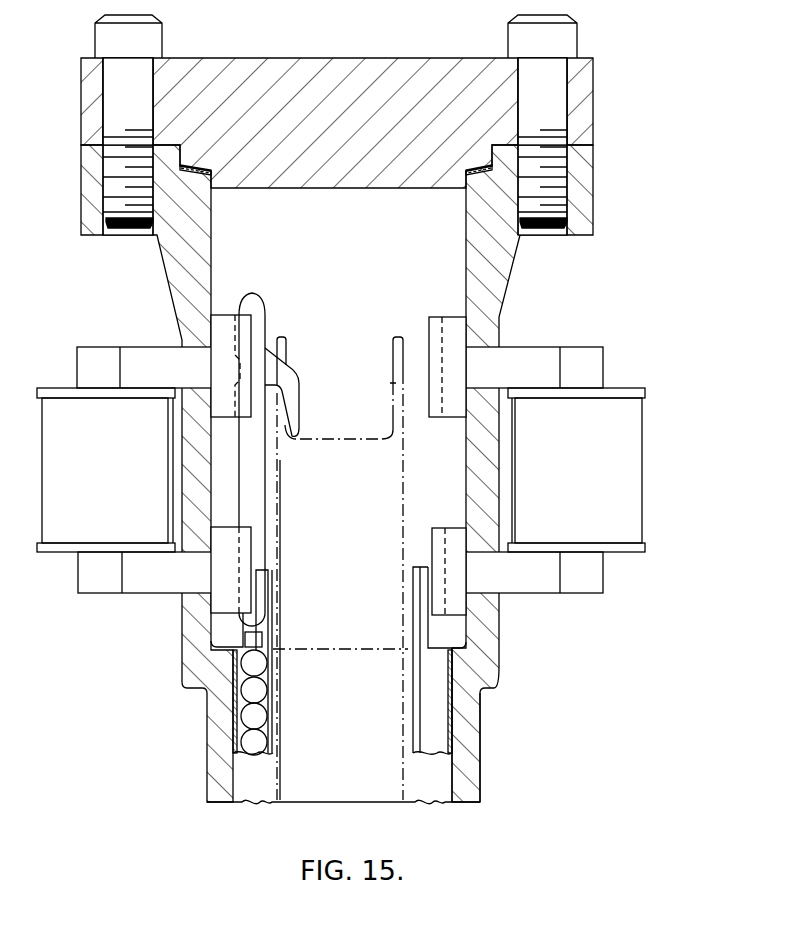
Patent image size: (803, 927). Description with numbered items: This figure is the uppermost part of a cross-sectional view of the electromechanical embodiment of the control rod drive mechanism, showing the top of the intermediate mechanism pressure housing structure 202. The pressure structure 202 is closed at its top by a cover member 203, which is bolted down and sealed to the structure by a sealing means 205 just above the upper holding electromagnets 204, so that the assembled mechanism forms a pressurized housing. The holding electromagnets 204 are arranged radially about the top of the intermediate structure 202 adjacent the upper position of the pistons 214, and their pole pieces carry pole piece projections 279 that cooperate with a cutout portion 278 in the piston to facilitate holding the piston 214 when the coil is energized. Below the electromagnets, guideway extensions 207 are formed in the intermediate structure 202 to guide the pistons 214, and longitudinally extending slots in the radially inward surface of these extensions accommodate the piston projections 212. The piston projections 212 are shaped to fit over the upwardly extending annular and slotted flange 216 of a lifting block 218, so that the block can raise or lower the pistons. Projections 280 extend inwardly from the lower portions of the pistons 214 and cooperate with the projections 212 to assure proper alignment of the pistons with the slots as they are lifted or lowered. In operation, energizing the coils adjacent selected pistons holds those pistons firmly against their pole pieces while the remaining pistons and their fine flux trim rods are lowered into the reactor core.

The intermediate mechanism pressure housing structure 202 is at (207, 762).
The cover member 203 is at (583, 105).
The holding electromagnets 204 is at (700, 498).
The sealing means 205 is at (480, 172).
The guideway extensions 207 is at (455, 718).
The piston projections 212 is at (306, 404).
The pistons 214 is at (258, 497).
The annular slotted flange 216 is at (393, 350).
The lifting block 218 is at (383, 508).
The cutout portion 278 is at (238, 373).
The pole piece projections 279 is at (138, 352).
The projections 280 is at (275, 590).